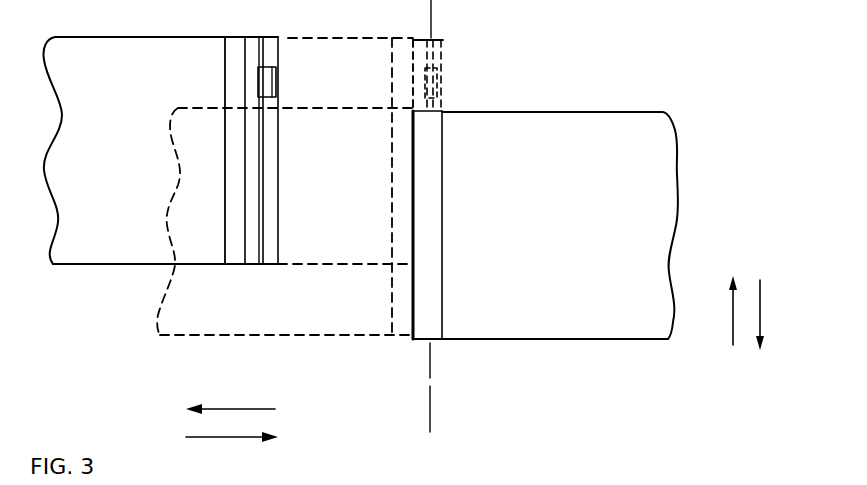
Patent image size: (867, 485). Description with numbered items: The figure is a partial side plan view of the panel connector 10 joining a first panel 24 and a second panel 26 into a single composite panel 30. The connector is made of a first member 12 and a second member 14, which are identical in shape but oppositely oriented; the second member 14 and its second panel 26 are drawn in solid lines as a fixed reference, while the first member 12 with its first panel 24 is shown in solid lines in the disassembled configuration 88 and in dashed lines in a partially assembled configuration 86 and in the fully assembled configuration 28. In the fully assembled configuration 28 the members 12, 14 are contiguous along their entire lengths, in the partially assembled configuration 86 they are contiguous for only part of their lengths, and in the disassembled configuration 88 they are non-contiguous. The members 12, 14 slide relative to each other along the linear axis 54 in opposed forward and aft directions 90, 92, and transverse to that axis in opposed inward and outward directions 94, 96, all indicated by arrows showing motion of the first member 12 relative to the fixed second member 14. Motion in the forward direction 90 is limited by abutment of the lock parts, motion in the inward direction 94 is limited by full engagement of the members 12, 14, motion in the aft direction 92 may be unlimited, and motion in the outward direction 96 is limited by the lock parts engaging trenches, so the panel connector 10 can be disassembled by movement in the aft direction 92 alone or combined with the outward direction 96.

The panel connector 10 is at (233, 38).
The first member 12 is at (246, 38).
The second member 14 is at (433, 341).
The first panel 24 is at (78, 266).
The second panel 26 is at (540, 111).
The fully assembled configuration 28 is at (288, 338).
The composite panel 30 is at (645, 70).
The linear axis 54 is at (433, 16).
The partially assembled configuration 86 is at (288, 38).
The disassembled configuration 88 is at (227, 38).
The forward direction 90 is at (733, 312).
The aft direction 92 is at (763, 318).
The inward direction 94 is at (232, 438).
The outward direction 96 is at (245, 409).